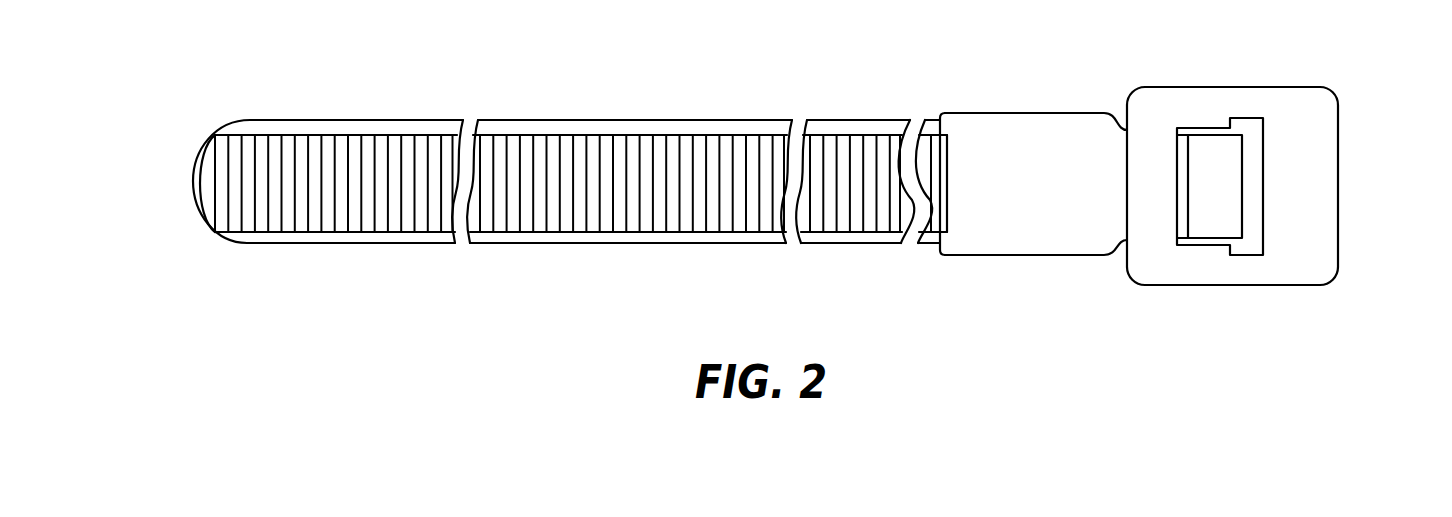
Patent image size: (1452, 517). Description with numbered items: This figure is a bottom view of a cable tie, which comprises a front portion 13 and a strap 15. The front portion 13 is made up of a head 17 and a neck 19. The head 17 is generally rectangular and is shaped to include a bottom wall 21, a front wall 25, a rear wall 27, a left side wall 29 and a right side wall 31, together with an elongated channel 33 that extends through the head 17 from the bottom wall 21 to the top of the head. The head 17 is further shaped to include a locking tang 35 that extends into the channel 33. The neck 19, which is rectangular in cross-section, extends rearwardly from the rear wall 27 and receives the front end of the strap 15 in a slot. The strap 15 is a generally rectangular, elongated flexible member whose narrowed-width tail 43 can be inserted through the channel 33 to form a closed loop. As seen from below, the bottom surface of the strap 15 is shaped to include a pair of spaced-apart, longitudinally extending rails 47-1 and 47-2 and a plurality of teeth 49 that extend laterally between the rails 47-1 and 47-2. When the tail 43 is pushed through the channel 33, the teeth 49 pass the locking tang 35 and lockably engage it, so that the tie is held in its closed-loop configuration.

The front portion 13 is at (1113, 66).
The strap 15 is at (538, 90).
The head 17 is at (1238, 307).
The neck 19 is at (1070, 276).
The bottom wall 21 is at (1310, 250).
The front wall 25 is at (1338, 162).
The rear wall 27 is at (1127, 160).
The left side wall 29 is at (1190, 287).
The right side wall 31 is at (1280, 87).
The elongated channel 33 is at (1252, 133).
The locking tang 35 is at (1210, 155).
The tail 43 is at (193, 181).
The rail 47-1 is at (347, 125).
The rail 47-2 is at (352, 237).
The teeth 49 is at (640, 172).